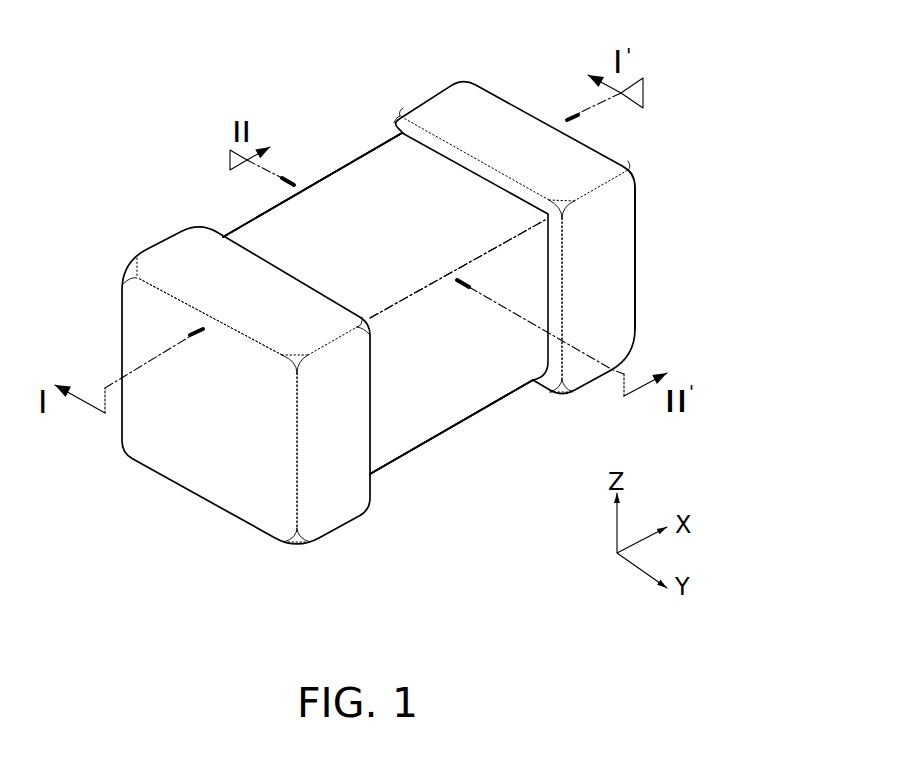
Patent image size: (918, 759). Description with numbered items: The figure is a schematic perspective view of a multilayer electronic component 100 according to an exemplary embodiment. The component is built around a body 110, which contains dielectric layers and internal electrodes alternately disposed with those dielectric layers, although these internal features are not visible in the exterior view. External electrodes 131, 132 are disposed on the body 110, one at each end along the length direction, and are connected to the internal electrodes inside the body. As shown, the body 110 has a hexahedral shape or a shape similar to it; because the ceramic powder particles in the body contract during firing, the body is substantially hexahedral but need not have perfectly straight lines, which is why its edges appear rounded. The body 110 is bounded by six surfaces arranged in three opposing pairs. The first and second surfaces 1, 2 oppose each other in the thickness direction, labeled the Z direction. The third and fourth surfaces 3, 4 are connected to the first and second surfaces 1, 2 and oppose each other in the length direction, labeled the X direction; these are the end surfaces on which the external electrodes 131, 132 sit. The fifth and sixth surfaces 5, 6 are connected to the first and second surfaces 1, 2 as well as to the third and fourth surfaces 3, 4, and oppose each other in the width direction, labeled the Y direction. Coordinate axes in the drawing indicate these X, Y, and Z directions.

The multilayer electronic component 100 is at (164, 45).
The body 110 is at (257, 240).
The external electrode 131 is at (180, 258).
The external electrode 132 is at (435, 113).
The first surface 1 is at (420, 398).
The second surface 2 is at (392, 186).
The third surface 3 is at (214, 445).
The fourth surface 4 is at (588, 249).
The fifth surface 5 is at (477, 369).
The sixth surface 6 is at (339, 208).